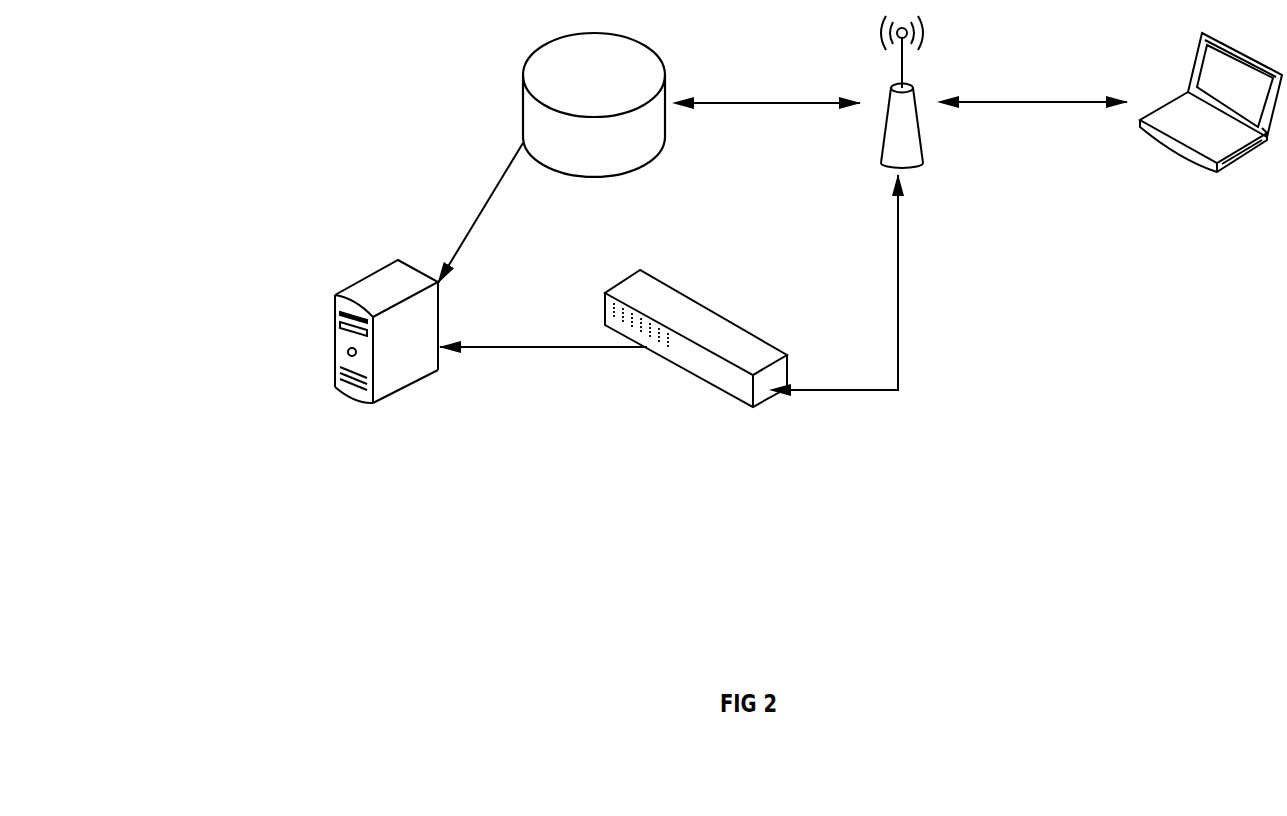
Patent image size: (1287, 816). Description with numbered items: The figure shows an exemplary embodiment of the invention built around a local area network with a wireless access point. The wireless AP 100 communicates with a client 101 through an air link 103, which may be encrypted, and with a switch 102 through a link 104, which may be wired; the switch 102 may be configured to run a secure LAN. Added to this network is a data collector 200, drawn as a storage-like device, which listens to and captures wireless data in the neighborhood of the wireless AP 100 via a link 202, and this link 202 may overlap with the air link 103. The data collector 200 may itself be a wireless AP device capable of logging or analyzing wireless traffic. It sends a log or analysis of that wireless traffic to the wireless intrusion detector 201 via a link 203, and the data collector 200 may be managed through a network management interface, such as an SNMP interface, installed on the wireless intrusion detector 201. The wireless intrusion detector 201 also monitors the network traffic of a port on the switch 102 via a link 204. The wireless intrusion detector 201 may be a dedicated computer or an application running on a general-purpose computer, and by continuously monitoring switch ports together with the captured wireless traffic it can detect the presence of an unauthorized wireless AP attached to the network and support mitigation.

The wireless access point 100 is at (923, 138).
The client 101 is at (1217, 170).
The switch 102 is at (673, 363).
The air link 103 is at (1035, 102).
The link 104 is at (898, 255).
The data collector 200 is at (523, 95).
The wireless intrusion detector 201 is at (335, 340).
The link 202 is at (763, 103).
The link 203 is at (490, 208).
The link 204 is at (540, 347).